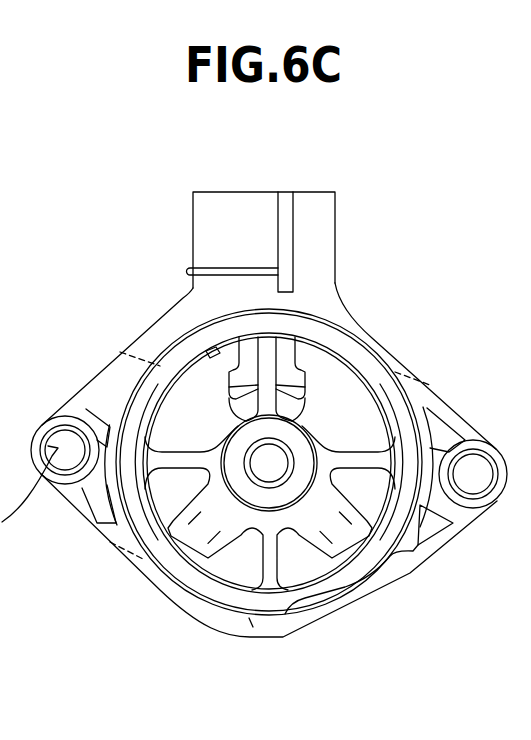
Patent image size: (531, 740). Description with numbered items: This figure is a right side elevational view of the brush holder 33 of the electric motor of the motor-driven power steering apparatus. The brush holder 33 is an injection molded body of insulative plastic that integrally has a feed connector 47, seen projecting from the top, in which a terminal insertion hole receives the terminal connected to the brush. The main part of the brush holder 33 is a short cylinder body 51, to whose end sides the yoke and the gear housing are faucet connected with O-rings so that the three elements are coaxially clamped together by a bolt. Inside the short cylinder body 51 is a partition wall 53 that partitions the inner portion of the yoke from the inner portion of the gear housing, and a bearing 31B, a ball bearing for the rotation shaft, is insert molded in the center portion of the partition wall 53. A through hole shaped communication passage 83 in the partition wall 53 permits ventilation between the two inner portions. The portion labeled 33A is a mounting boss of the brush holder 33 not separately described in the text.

The brush holder 33 is at (375, 296).
The mounting boss 33A is at (33, 483).
The feed connector 47 is at (205, 215).
The short cylinder body 51 is at (406, 378).
The partition wall 53 is at (362, 415).
The communication passage 83 is at (210, 352).
The bearing 31B is at (300, 473).